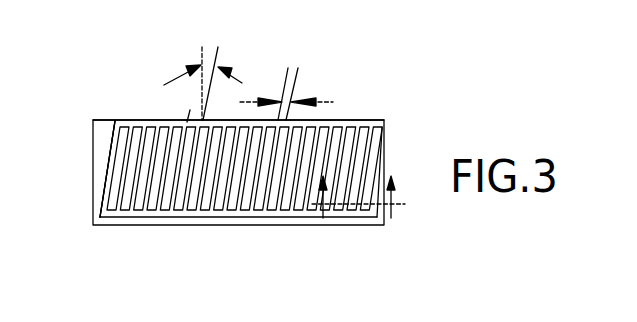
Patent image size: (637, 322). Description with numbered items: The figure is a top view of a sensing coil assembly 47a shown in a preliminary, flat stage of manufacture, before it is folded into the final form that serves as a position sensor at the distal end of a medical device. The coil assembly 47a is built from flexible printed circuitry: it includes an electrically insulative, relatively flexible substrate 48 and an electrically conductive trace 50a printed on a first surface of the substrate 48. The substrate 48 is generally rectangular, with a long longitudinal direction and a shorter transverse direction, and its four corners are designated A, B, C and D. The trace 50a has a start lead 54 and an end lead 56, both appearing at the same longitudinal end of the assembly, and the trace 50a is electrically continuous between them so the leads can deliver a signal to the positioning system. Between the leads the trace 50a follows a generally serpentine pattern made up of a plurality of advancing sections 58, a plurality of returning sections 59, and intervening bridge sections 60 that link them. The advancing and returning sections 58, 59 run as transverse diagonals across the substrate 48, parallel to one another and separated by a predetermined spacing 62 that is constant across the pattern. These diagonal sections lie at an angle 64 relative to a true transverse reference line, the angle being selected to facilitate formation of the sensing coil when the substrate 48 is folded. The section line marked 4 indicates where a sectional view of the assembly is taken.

The sensing coil assembly 47a is at (86, 82).
The substrate 48 is at (112, 112).
The electrically conductive trace 50a is at (96, 153).
The start lead 54 is at (107, 192).
The end lead 56 is at (113, 220).
The advancing sections 58 is at (177, 127).
The returning sections 59 is at (190, 123).
The bridge sections 60 is at (176, 121).
The spacing 62 is at (327, 100).
The angle 64 is at (243, 86).
The section line 4- 4 is at (321, 219).
The corner A is at (384, 120).
The corner B is at (387, 227).
The corner C is at (92, 120).
The corner D is at (93, 226).